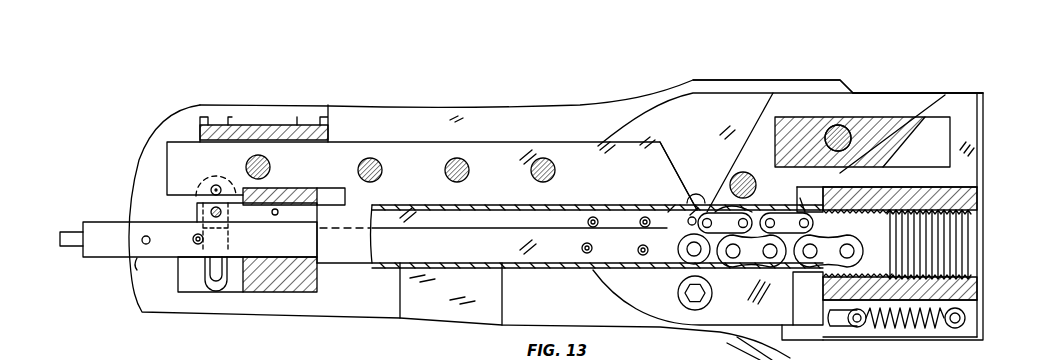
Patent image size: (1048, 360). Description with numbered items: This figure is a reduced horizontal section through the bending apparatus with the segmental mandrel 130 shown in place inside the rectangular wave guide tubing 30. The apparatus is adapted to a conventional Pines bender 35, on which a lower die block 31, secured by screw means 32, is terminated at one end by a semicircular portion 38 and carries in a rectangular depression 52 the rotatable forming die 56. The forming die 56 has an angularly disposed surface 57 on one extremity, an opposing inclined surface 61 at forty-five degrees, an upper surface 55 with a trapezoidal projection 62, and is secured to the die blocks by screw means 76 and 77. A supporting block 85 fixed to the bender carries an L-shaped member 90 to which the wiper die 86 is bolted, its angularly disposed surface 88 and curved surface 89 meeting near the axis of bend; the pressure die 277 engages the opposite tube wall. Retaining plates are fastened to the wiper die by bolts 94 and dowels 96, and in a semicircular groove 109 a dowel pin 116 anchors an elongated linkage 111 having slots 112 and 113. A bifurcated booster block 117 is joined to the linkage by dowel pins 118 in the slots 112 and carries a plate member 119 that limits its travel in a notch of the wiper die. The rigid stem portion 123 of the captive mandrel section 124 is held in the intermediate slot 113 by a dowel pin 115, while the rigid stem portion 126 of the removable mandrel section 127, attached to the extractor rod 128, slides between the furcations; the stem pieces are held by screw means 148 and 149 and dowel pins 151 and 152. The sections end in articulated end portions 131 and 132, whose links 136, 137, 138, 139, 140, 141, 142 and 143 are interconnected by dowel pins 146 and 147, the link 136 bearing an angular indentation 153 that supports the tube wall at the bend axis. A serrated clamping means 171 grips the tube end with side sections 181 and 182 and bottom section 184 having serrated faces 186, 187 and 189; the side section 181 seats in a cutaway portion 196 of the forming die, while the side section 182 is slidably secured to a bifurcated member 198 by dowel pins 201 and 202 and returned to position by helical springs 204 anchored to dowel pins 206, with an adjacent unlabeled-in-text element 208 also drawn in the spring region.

The Pines bender 35 is at (435, 91).
The L-shaped member 90 is at (276, 125).
The wiper die 86 is at (165, 178).
The supporting block 85 is at (538, 113).
The semicircular portion 38 is at (607, 121).
The lower die block 31 is at (680, 92).
The bolts 94 is at (271, 168).
The dowels 96 is at (383, 170).
The dowel pin 116 is at (216, 185).
The semicircular groove 109 is at (202, 188).
The plate member 119 is at (298, 193).
The rigid stem portion 123 is at (196, 213).
The dowel pin 115 is at (211, 216).
The intermediate slot 113 is at (227, 233).
The dowel pin 118 is at (193, 243).
The screw means 149 is at (204, 239).
The dowel pin 151 is at (278, 212).
The dowel pin 152 is at (142, 240).
The rod 128 is at (75, 245).
The removable mandrel section 127 is at (138, 270).
The booster block 117 is at (317, 283).
The elongated linkage 111 is at (206, 276).
The slot 112 is at (219, 280).
The rectangular wave guide tubing 30 is at (422, 205).
The captive mandrel section 124 is at (467, 207).
The rigid stem portion 126 is at (480, 266).
The pressure die 277 is at (504, 290).
The angularly disposed surface 57 is at (776, 118).
The projection 62 is at (777, 150).
The screw means 77 is at (876, 122).
The rectangular-shaped depression 52 is at (930, 122).
The upper surface 55 is at (902, 99).
The forming die 56 is at (834, 94).
The inclined surface 61 is at (862, 188).
The cutaway portion 196 is at (802, 188).
The link 139 is at (800, 200).
The screw means 76 is at (752, 193).
The angularly disposed surface 88 is at (672, 172).
The link 137 is at (703, 208).
The angular indentation 153 is at (672, 198).
The link member 136 is at (698, 212).
The link 138 is at (755, 212).
The screw means 148 is at (640, 222).
The curved surface 89 is at (690, 222).
The dowel pin 146 is at (755, 223).
The articulated end portion 131 is at (816, 223).
The articulated end portion 132 is at (877, 256).
The dowel pin 147 is at (764, 256).
The link 140 is at (690, 273).
The screw means 32 is at (711, 295).
The link 142 is at (786, 270).
The link 141 is at (768, 285).
The link 143 is at (900, 287).
The serrated face 186 is at (968, 228).
The serrated clamping means 171 is at (983, 191).
The side section 181 is at (980, 204).
The serrated face 189 is at (970, 240).
The bottom section 184 is at (972, 252).
The serrated face 187 is at (962, 273).
The side section 182 is at (966, 291).
The bifurcated member 198 is at (978, 303).
The dowel pin 201 is at (858, 332).
The spring 208 is at (926, 332).
The dowel pin 206 is at (966, 318).
The dowel pin 202 is at (950, 336).
The helical spring 204 is at (960, 331).
The segmental mandrel 130 is at (102, 214).